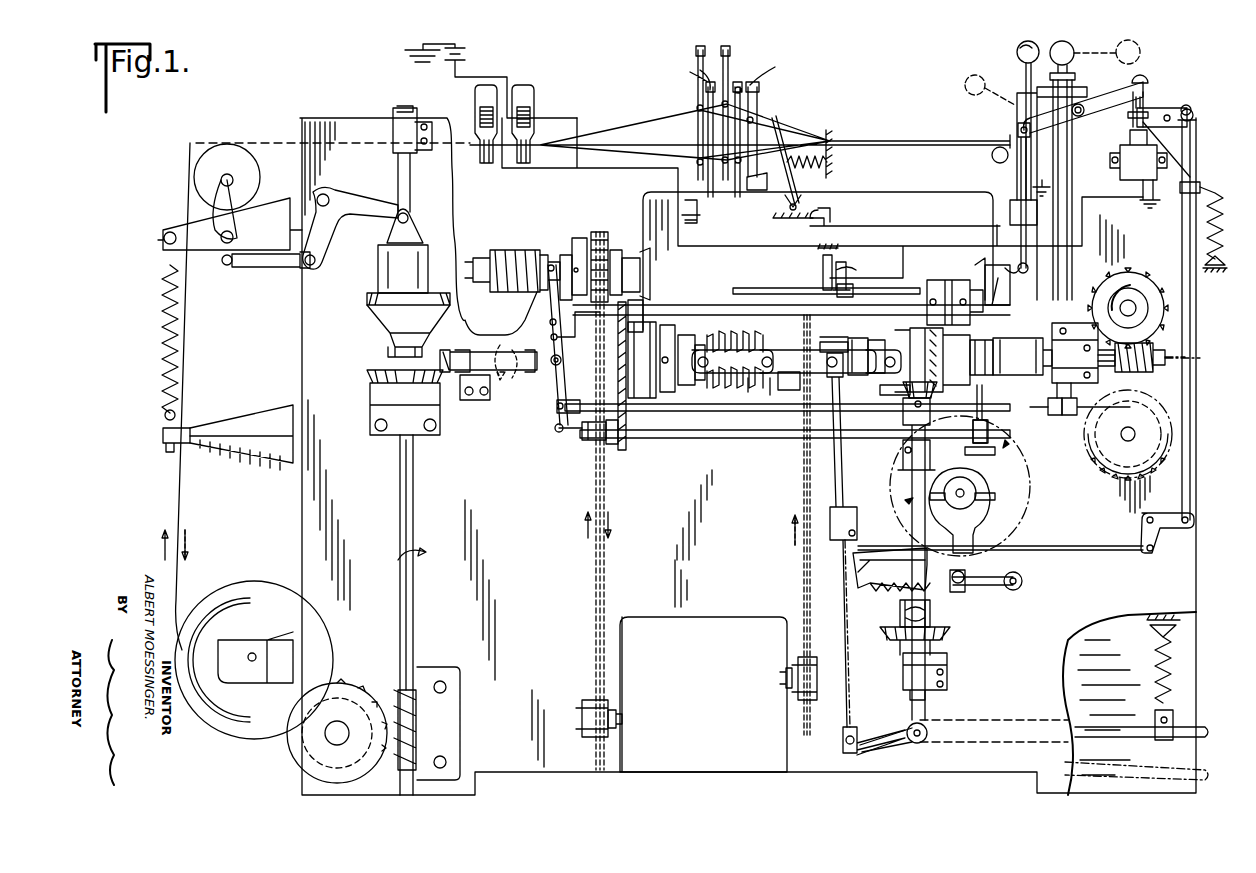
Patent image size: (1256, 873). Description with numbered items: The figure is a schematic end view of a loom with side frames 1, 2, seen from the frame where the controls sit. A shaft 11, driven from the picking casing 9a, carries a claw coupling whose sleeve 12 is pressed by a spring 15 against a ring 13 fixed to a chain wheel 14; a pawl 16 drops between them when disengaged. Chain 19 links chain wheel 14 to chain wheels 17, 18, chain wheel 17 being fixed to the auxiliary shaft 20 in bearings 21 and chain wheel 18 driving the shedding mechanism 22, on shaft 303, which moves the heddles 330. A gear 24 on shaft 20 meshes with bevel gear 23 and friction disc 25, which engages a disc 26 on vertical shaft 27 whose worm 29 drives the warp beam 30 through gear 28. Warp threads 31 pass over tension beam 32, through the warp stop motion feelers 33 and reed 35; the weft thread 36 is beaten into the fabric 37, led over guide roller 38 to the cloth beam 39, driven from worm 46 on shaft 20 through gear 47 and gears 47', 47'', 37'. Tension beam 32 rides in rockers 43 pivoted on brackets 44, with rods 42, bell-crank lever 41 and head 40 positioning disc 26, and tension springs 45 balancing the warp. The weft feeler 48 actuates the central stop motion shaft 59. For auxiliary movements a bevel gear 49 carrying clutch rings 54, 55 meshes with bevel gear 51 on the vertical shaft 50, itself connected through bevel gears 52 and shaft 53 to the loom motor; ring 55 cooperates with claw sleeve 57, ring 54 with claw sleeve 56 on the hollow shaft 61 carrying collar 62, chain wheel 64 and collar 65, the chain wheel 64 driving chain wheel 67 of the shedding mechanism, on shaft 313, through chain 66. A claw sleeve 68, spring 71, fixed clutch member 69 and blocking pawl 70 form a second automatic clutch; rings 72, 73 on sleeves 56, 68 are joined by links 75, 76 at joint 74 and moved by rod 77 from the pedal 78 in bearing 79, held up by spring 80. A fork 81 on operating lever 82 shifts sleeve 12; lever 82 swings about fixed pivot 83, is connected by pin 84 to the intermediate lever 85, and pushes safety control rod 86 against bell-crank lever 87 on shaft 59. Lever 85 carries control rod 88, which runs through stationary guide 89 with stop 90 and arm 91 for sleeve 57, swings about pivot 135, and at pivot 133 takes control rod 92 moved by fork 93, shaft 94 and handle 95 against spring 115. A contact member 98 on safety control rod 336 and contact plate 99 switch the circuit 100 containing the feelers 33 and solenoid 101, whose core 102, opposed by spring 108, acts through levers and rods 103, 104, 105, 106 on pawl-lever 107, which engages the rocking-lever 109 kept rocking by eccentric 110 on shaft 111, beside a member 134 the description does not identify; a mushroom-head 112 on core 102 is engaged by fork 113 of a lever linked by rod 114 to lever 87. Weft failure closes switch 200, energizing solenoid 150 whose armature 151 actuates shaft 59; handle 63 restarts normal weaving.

The machine housing 1 is at (1194, 687).
The frame 2 is at (302, 511).
The plate 9a is at (647, 198).
The clutch member 11 is at (630, 256).
The clutch disc 12 is at (564, 254).
The sprocket 13 is at (596, 232).
The clutch plate 14 is at (616, 248).
The clutch spring 15 is at (506, 250).
The clutch plate 16 is at (578, 236).
The bracket 17 is at (652, 283).
The sprocket 18 is at (595, 740).
The chain 19 is at (595, 565).
The shaft 20 is at (522, 376).
The bearing block 21 is at (474, 347).
The motor 22 is at (706, 690).
The bevel gear 23 is at (368, 372).
The shaft 24 is at (444, 351).
The cone 25 is at (368, 322).
The flange 26 is at (362, 298).
The vertical shaft 27 is at (399, 487).
The worm wheel 28 is at (290, 748).
The worm 29 is at (420, 720).
The reel 30 is at (262, 614).
The tape 31 is at (182, 486).
The pulley 32 is at (218, 146).
The relay coils 33 is at (531, 64).
The contact rod 35 is at (776, 76).
The contact lever 36 is at (775, 122).
The bar 37 is at (995, 302).
The gear 37' is at (1125, 451).
The roller 38 is at (994, 160).
The gear hub 39 is at (1121, 436).
The shaft bearing 40 is at (378, 268).
The lever 41 is at (350, 200).
The link 42 is at (266, 267).
The arm 43 is at (235, 187).
The lever 44 is at (270, 240).
The spring 45 is at (162, 310).
The worm 46 is at (1152, 369).
The worm wheel 47 is at (1131, 300).
The gear segment 47' is at (1106, 281).
The worm axis 47'' is at (1199, 343).
The spring 48 is at (786, 173).
The bevel pinion 49 is at (934, 390).
The cam disc 50 is at (910, 458).
The shaft 51 is at (902, 406).
The bevel gear 52 is at (950, 635).
The hub 53 is at (940, 603).
The collar 54 is at (904, 386).
The nut 55 is at (962, 341).
The bevel gear 56 is at (918, 340).
The rod 57 is at (984, 386).
The bracket 59 is at (978, 268).
The link 61 is at (877, 359).
The collar 62 is at (862, 334).
The knob 63 is at (1032, 42).
The block 64 is at (828, 342).
The spring 65 is at (780, 334).
The chain 66 is at (804, 468).
The sprocket 67 is at (808, 664).
The collar 68 is at (704, 382).
The collar 69 is at (684, 388).
The clutch housing 70 is at (660, 322).
The collar 71 is at (770, 390).
The collar 72 is at (876, 342).
The collar 73 is at (748, 388).
The spring 74 is at (762, 382).
The link 75 is at (732, 360).
The link 76 is at (818, 360).
The lever 77 is at (836, 725).
The arm 78 is at (875, 738).
The roller 79 is at (924, 726).
The spring 80 is at (1160, 661).
The pin 81 is at (550, 252).
The lever 82 is at (548, 304).
The pivot 83 is at (552, 322).
The pivot 84 is at (552, 366).
The pivot 85 is at (552, 432).
The plate 86 is at (665, 323).
The block 87 is at (998, 282).
The rail 88 is at (696, 436).
The post 89 is at (616, 452).
The block 90 is at (606, 445).
The block 91 is at (982, 444).
The collar 92 is at (793, 402).
The block 93 is at (1052, 414).
The post 94 is at (1072, 230).
The knob 95 is at (1068, 44).
The contact 98 is at (840, 261).
The contact 99 is at (822, 265).
The wire 100 is at (582, 101).
The solenoid 101 is at (1122, 152).
The arm 102 is at (1148, 110).
The plunger 103 is at (1134, 124).
The rod 104 is at (1190, 455).
The link 105 is at (1142, 525).
The rod 106 is at (1104, 548).
The lever 107 is at (842, 540).
The spring 108 is at (1212, 214).
The sector 109 is at (888, 570).
The cam follower 110 is at (971, 519).
The pivot 111 is at (960, 482).
The lever 112 is at (1148, 75).
The knob 113 is at (1146, 80).
The rod 114 is at (1014, 158).
The block 115 is at (1070, 416).
The block 133 is at (556, 410).
The link 134 is at (1022, 578).
The block 135 is at (580, 444).
The block 150 is at (1008, 209).
The arm 151 is at (1040, 257).
The wire 200 is at (825, 212).
The pin 303 is at (625, 719).
The pin 313 is at (778, 678).
The contact rods 330 is at (696, 77).
The rod 336 is at (768, 286).